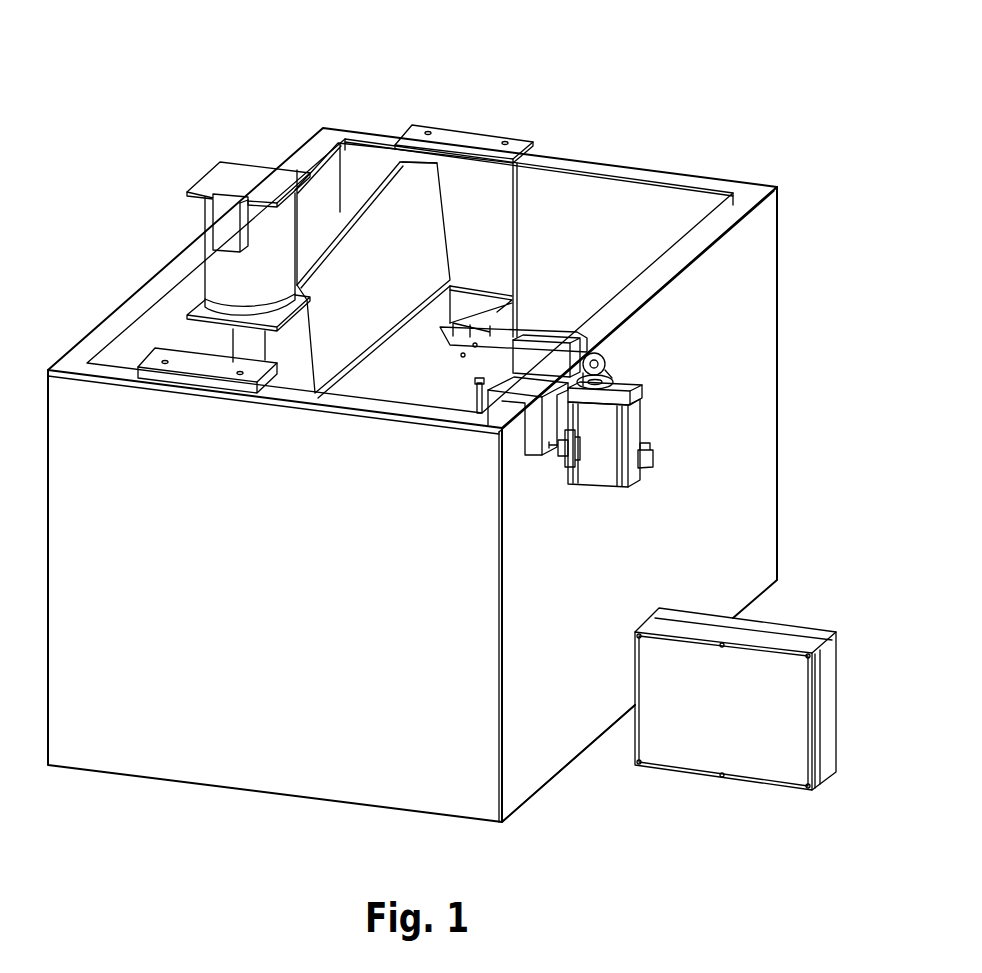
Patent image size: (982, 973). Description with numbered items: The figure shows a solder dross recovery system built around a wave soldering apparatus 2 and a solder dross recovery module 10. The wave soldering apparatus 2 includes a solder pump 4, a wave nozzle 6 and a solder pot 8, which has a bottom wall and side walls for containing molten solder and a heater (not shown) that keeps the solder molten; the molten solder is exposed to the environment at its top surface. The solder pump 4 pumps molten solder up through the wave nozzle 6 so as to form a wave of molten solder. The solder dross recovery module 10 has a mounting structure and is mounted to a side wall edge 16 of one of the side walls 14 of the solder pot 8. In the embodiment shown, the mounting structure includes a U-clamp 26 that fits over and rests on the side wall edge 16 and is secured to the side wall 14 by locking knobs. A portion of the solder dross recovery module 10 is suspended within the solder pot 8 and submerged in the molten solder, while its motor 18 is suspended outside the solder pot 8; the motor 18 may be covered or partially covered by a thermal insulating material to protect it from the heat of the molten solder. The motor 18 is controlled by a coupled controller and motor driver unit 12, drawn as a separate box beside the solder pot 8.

The wave soldering apparatus 2 is at (166, 50).
The solder pump 4 is at (245, 268).
The wave nozzle 6 is at (415, 220).
The solder pot 8 is at (657, 220).
The solder dross recovery module 10 is at (626, 426).
The controller and motor driver unit 12 is at (746, 748).
The side wall 14 is at (750, 279).
The side wall edge 16 is at (703, 235).
The motor 18 is at (597, 470).
The U-clamp 26 is at (532, 447).